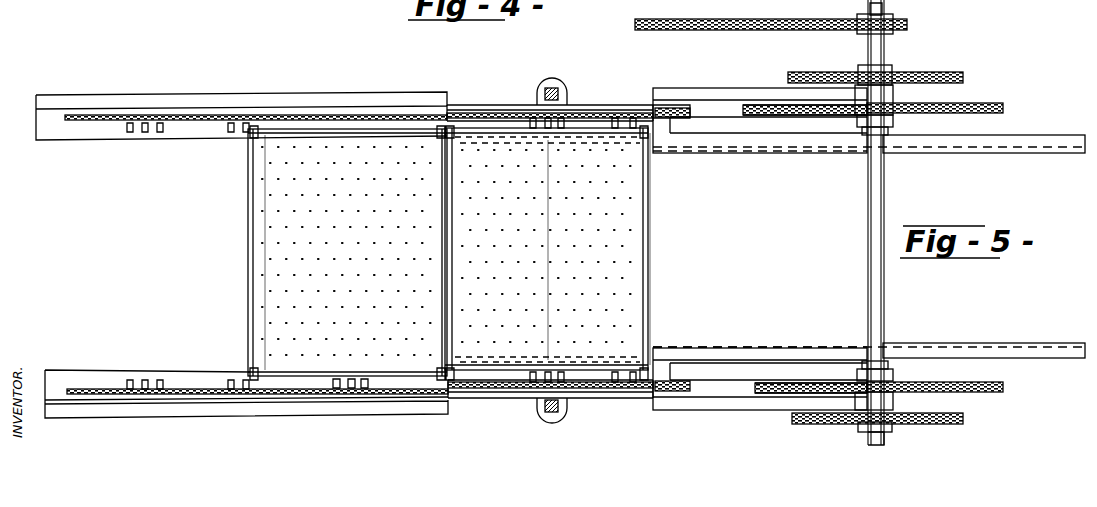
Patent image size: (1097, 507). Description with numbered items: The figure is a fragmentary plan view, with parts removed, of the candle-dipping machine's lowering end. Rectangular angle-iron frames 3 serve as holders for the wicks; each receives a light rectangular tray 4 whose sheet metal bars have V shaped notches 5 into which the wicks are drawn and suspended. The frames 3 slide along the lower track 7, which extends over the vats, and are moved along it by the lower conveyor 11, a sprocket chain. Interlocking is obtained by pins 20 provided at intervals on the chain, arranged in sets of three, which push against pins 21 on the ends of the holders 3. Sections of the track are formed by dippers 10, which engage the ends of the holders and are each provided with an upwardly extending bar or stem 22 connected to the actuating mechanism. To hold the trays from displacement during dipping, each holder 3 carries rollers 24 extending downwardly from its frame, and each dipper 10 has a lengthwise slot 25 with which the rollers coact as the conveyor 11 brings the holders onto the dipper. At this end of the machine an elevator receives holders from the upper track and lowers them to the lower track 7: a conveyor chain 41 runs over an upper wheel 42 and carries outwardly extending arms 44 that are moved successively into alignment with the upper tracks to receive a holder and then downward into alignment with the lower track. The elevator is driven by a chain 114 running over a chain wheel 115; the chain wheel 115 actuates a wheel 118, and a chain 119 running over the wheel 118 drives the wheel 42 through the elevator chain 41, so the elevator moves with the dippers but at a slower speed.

The frame 3 is at (247, 199).
The tray 4 is at (632, 180).
The V shaped notches 5 is at (278, 282).
The lower track 7 is at (90, 128).
The dipper 10 is at (582, 104).
The lower conveyor 11 is at (175, 124).
The pins 20 is at (232, 133).
The pins 21 is at (258, 140).
The bar or stem 22 is at (551, 88).
The rollers 24 is at (475, 145).
The lengthwise slot 25 is at (553, 145).
The conveyor chain 41 is at (970, 102).
The upper wheel 42 is at (893, 126).
The arms 44 is at (730, 125).
The chain 114 is at (688, 31).
The chain wheel 115 is at (857, 36).
The wheel 118 is at (888, 66).
The chain 119 is at (796, 73).